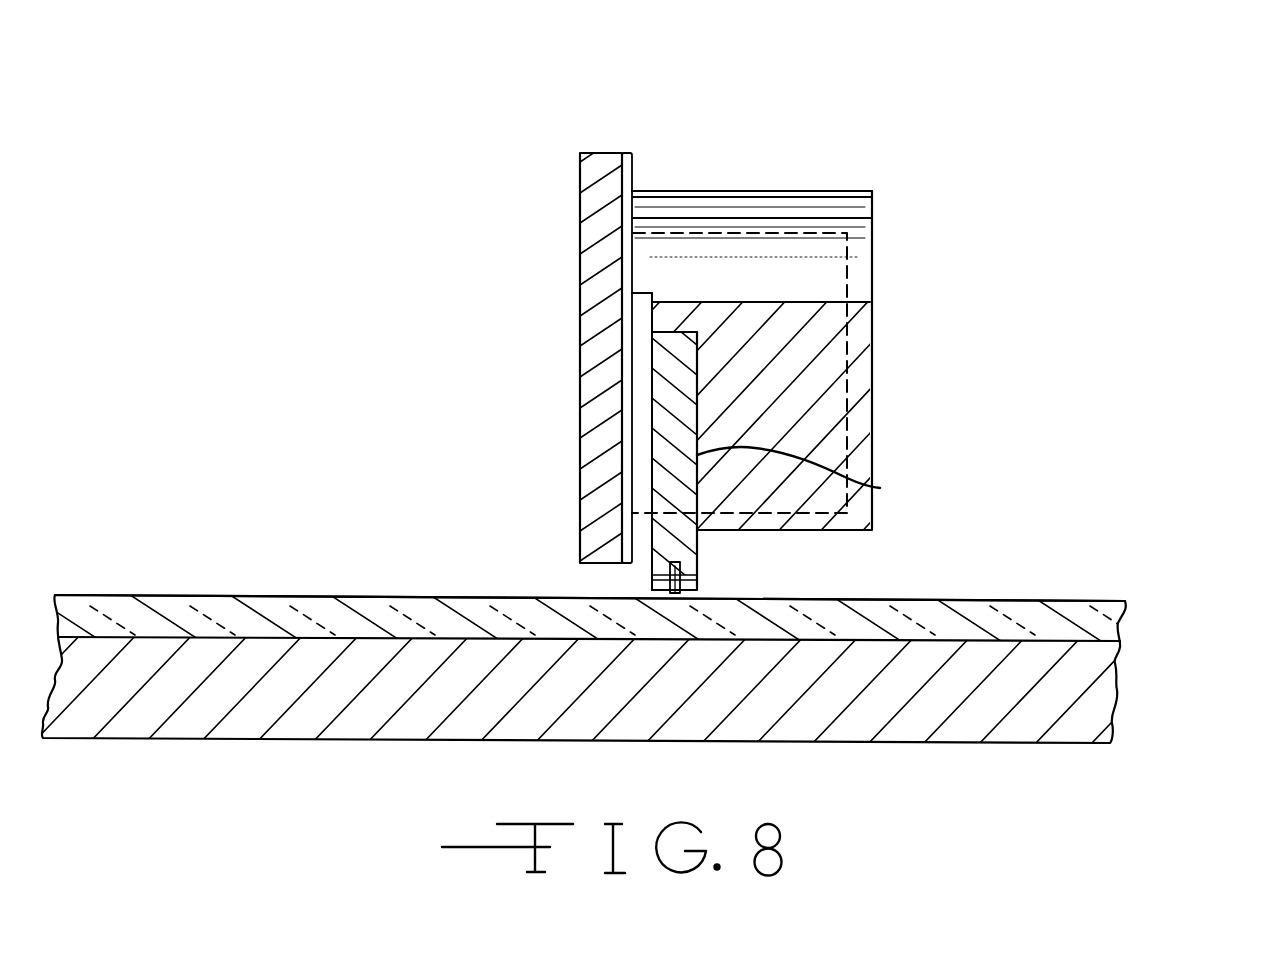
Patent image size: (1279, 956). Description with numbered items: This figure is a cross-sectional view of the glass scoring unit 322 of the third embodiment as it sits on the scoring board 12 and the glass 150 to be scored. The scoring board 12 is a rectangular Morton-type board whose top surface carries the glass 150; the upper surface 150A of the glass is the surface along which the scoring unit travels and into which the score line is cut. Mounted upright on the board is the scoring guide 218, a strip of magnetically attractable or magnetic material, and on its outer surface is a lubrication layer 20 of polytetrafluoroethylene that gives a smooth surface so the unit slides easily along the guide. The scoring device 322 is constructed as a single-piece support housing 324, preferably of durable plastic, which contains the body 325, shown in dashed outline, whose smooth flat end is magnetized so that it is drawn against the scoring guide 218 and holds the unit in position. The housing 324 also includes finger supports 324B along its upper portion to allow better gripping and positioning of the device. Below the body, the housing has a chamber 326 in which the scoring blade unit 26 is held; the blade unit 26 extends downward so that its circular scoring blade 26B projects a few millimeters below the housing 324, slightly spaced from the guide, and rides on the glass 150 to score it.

The scoring board 12 is at (1070, 683).
The glass 150 is at (1088, 615).
The top surface of layer 150A is at (286, 586).
The scoring guide 218 is at (598, 259).
The lubrication layer 20 is at (635, 172).
The glass scoring unit 322 is at (890, 212).
The finger supports 324B is at (807, 190).
The support housing 324 is at (872, 328).
The body 325 is at (870, 369).
The chamber 326 is at (910, 488).
The scoring blade unit 26 is at (670, 532).
The scoring blade 26B is at (680, 598).